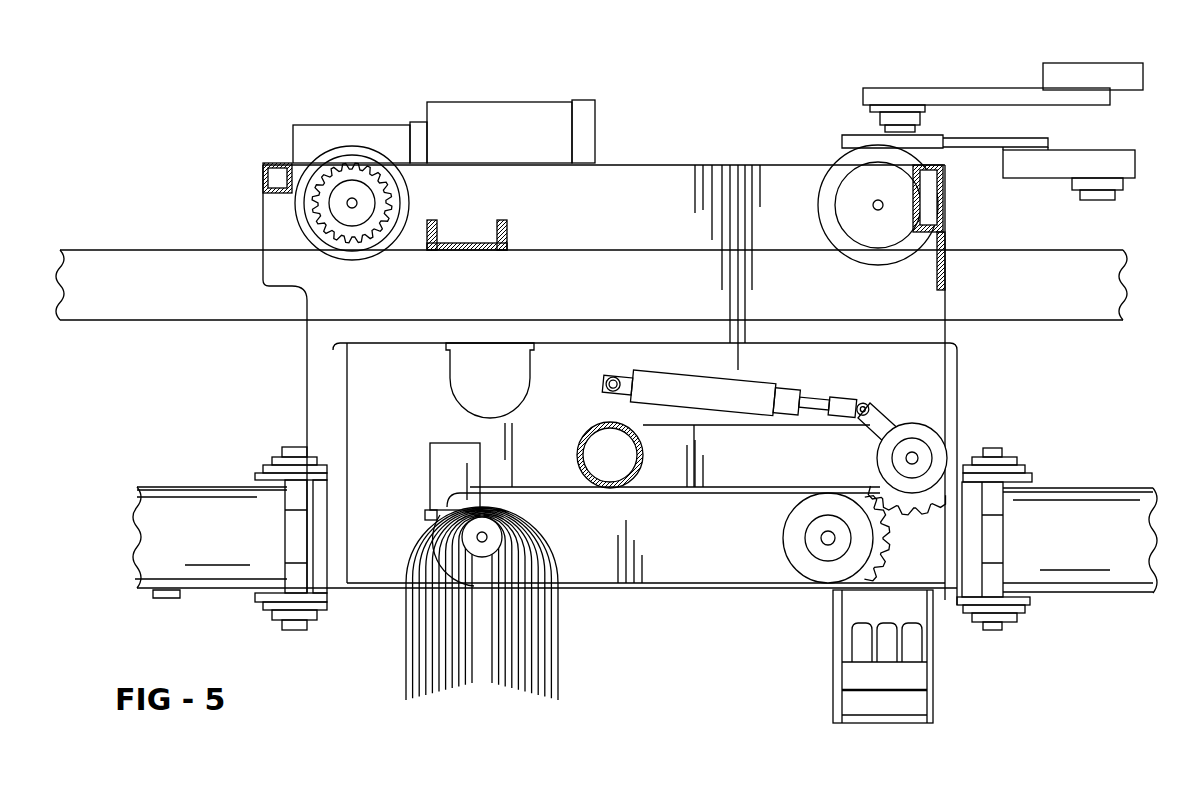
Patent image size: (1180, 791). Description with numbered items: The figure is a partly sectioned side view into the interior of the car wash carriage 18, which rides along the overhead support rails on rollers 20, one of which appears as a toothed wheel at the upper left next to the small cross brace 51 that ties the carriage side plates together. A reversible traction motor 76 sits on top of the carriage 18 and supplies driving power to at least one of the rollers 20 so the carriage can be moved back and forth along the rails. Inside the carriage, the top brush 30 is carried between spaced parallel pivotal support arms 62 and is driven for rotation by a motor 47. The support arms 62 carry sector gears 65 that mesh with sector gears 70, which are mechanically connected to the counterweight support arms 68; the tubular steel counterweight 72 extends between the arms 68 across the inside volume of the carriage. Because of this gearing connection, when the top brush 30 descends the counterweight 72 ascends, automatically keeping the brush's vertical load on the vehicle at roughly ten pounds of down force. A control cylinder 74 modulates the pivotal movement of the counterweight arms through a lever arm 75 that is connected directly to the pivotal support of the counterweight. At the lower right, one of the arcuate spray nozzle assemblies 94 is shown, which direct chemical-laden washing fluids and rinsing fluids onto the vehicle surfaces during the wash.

The carriage 18 is at (628, 165).
The rollers 20 is at (389, 252).
The top brush 30 is at (540, 630).
The motor 47 is at (428, 480).
The cross brace 51 is at (463, 242).
The pivotal support arms 62 is at (741, 572).
The sector gears 65 is at (893, 543).
The counterweight support arms 68 is at (760, 477).
The sector gears 70 is at (962, 440).
The counterweight 72 is at (592, 430).
The control cylinder 74 is at (750, 374).
The lever arm 75 is at (898, 416).
The reversible traction motor 76 is at (520, 113).
The arcuate spray nozzle assemblies 94 is at (933, 672).